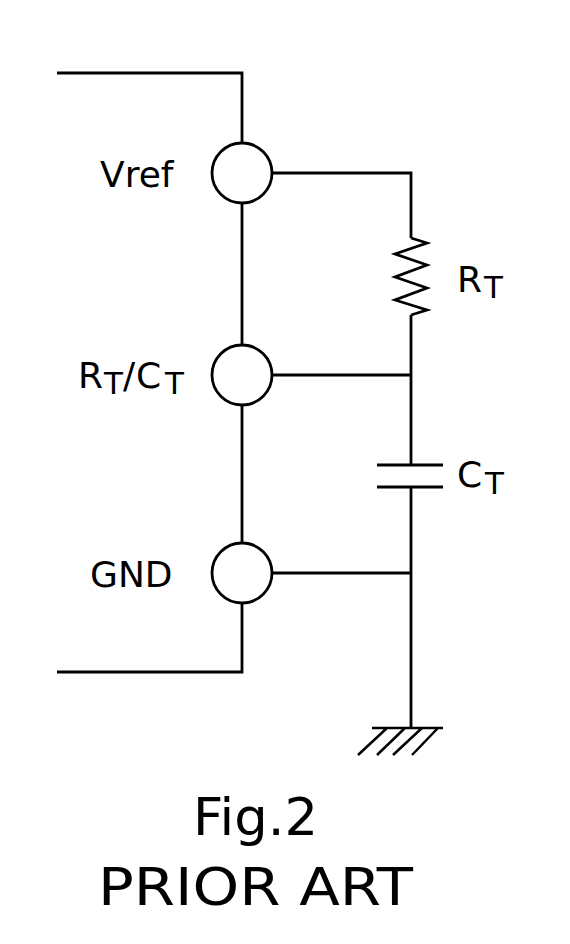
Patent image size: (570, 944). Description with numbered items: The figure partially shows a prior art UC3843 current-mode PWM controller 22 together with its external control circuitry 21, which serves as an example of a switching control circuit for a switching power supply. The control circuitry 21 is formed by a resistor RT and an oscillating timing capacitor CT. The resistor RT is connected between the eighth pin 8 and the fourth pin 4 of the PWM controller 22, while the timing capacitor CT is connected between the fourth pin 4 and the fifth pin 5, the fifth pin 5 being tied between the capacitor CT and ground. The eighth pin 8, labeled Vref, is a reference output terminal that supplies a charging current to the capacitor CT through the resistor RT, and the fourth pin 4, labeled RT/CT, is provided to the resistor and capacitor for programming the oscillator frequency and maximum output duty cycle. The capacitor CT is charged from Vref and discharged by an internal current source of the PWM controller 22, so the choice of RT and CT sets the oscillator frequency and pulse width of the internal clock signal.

The control circuitry 21 is at (469, 167).
The UC3843 current-mode PWM controller 22 is at (172, 73).
The eighth pin (Vref) 8 is at (242, 173).
The fourth pin (RT/CT) 4 is at (242, 375).
The fifth pin (GND) 5 is at (242, 573).